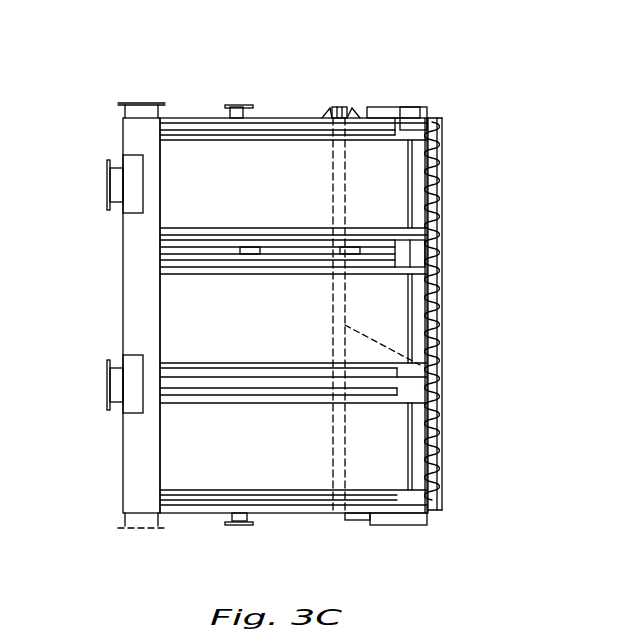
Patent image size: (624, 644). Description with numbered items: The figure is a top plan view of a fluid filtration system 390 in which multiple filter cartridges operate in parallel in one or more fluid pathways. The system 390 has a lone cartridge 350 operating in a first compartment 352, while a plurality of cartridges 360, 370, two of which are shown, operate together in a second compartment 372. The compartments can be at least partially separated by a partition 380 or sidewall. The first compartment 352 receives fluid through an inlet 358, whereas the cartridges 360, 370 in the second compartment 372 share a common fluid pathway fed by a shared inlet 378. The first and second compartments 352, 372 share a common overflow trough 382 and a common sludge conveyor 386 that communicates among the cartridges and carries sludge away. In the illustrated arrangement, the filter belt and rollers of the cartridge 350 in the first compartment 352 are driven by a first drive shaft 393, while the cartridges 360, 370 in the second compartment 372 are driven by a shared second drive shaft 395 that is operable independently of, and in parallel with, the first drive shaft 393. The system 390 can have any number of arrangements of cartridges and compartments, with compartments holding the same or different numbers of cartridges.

The first cartridge 350 is at (388, 190).
The first compartment 352 is at (221, 167).
The inlet 358 is at (107, 182).
The second cartridge 360 is at (387, 315).
The cartridge 370 is at (387, 448).
The second compartment 372 is at (222, 472).
The shared inlet 378 is at (107, 385).
The partition 380 is at (430, 243).
The common overflow trough 382 is at (125, 256).
The common sludge conveyor 386 is at (432, 118).
The fluid filtration system 390 is at (506, 90).
The first drive shaft 393 is at (332, 182).
The second drive shaft 395 is at (420, 365).